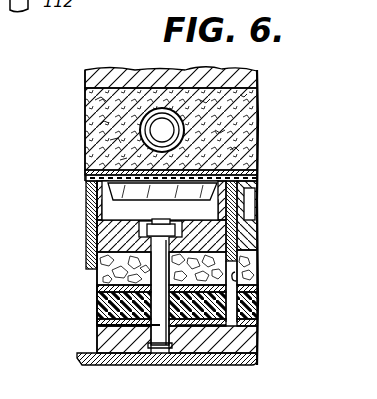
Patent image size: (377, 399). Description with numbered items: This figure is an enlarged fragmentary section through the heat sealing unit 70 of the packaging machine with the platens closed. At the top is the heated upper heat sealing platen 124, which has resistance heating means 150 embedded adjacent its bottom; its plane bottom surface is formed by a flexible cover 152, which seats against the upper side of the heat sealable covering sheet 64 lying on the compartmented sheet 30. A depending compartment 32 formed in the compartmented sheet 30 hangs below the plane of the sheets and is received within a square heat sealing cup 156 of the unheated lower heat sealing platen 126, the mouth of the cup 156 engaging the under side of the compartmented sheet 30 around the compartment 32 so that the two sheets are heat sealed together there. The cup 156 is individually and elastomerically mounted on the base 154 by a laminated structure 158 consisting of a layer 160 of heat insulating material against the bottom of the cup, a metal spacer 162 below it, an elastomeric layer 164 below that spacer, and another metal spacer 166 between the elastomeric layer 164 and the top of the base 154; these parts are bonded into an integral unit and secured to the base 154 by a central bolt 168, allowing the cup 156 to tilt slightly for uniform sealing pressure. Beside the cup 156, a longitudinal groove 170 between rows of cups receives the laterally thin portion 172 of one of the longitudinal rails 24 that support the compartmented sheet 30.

The upstream heat sealing unit 70 is at (258, 72).
The upper heat sealing platen 124 is at (252, 116).
The resistance heating means 150 is at (150, 129).
The flexible cover 152 is at (258, 172).
The covering sheet 64 is at (88, 178).
The compartmented sheet 30 is at (92, 183).
The compartment 32 is at (118, 192).
The laterally thin portion of rail 172 is at (110, 235).
The longitudinal rail 24 is at (95, 267).
The heat sealing cup 156 is at (100, 251).
The laminated structure 158 is at (93, 288).
The lower heat sealing platen 126 is at (95, 325).
The central bolt 168 is at (160, 325).
The heat insulating layer 160 is at (258, 254).
The longitudinal groove 170 is at (247, 279).
The metal spacer 162 is at (250, 290).
The elastomeric layer 164 is at (242, 311).
The metal spacer 166 is at (252, 325).
The base 154 is at (242, 343).